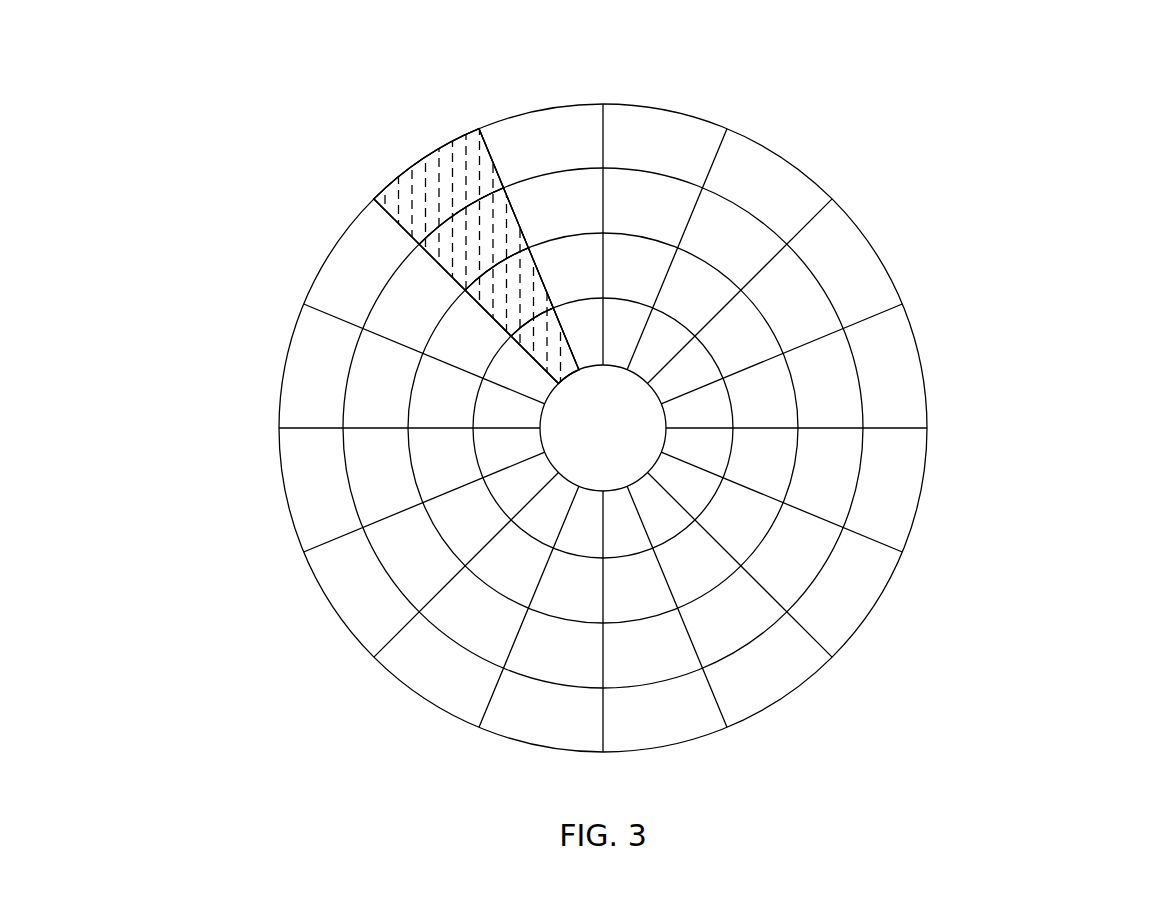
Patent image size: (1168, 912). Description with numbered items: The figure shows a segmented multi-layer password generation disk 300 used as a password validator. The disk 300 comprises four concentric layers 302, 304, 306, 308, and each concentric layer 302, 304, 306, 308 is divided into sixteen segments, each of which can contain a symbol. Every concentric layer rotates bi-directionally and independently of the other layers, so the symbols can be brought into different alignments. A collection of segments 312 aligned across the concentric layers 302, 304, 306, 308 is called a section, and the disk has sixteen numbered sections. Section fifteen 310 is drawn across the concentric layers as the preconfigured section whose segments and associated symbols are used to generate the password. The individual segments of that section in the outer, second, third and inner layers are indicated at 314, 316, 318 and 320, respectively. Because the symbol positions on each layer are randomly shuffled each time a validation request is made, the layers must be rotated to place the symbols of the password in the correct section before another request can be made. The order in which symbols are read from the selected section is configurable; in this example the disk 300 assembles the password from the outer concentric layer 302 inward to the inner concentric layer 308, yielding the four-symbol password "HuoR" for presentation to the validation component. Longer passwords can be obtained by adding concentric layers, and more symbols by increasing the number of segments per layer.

The segmented multi-layer password generation disk 300 is at (946, 83).
The concentric layer 302 is at (707, 507).
The concentric layer 304 is at (795, 462).
The concentric layer 306 is at (850, 353).
The concentric layer 308 is at (878, 253).
The section fifteen 310 is at (415, 122).
The collection of segments 312 is at (477, 153).
The layer 1 cell of sector 15 (H) 314 is at (431, 183).
The layer 2 cell of sector 15 (u) 316 is at (468, 238).
The layer 3 cell of sector 15 (0) 318 is at (503, 293).
The layer 4 cell of sector 15 (R) 320 is at (538, 346).